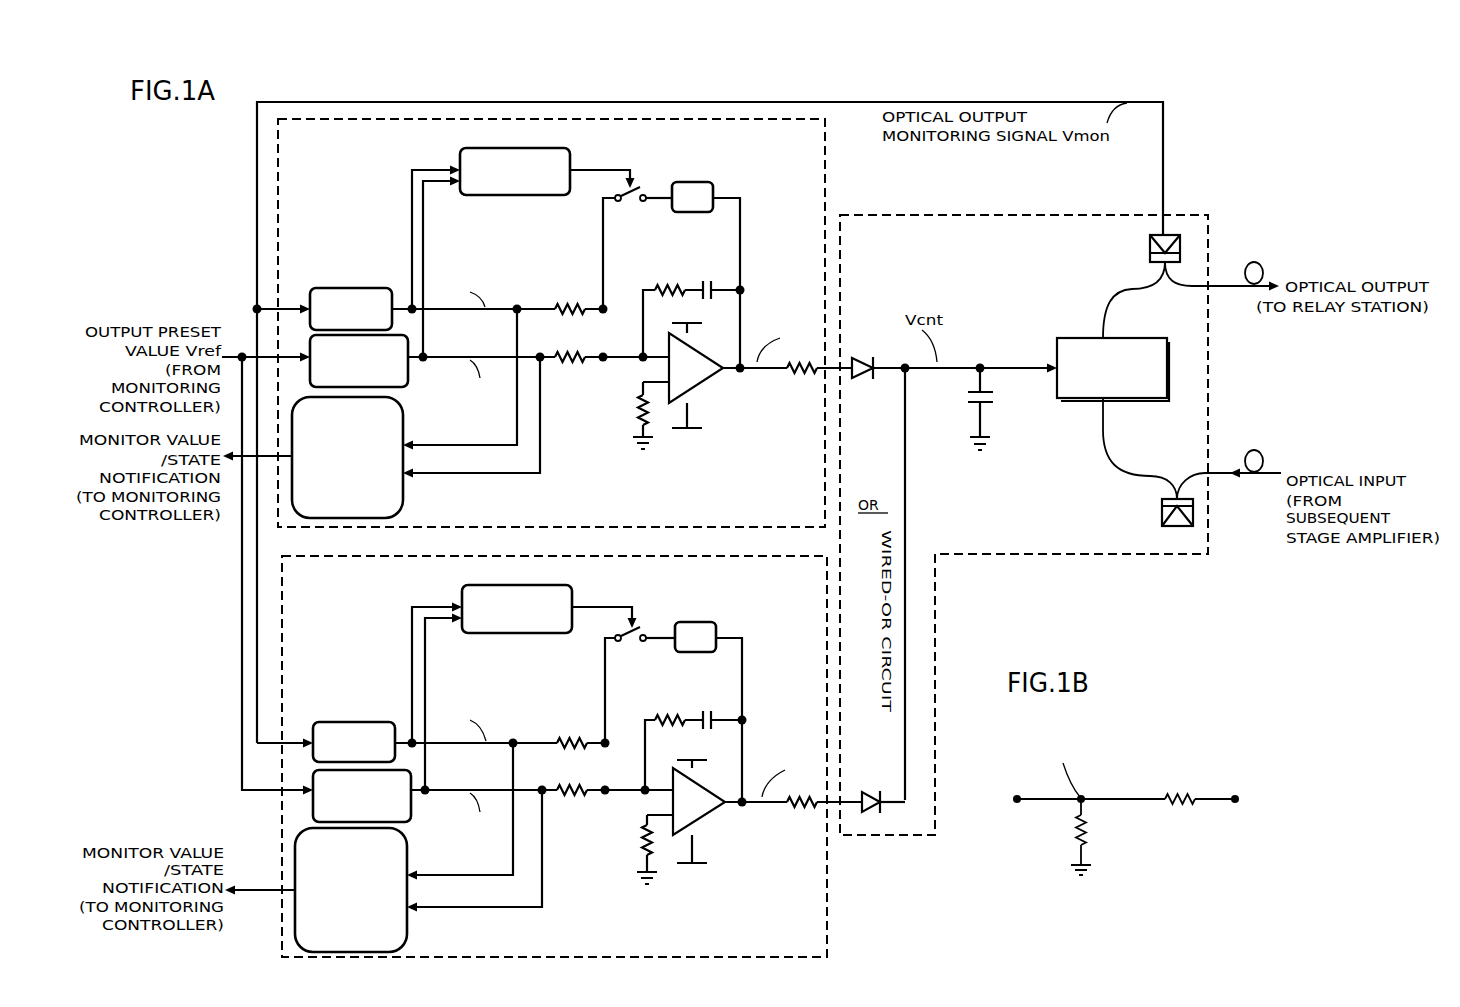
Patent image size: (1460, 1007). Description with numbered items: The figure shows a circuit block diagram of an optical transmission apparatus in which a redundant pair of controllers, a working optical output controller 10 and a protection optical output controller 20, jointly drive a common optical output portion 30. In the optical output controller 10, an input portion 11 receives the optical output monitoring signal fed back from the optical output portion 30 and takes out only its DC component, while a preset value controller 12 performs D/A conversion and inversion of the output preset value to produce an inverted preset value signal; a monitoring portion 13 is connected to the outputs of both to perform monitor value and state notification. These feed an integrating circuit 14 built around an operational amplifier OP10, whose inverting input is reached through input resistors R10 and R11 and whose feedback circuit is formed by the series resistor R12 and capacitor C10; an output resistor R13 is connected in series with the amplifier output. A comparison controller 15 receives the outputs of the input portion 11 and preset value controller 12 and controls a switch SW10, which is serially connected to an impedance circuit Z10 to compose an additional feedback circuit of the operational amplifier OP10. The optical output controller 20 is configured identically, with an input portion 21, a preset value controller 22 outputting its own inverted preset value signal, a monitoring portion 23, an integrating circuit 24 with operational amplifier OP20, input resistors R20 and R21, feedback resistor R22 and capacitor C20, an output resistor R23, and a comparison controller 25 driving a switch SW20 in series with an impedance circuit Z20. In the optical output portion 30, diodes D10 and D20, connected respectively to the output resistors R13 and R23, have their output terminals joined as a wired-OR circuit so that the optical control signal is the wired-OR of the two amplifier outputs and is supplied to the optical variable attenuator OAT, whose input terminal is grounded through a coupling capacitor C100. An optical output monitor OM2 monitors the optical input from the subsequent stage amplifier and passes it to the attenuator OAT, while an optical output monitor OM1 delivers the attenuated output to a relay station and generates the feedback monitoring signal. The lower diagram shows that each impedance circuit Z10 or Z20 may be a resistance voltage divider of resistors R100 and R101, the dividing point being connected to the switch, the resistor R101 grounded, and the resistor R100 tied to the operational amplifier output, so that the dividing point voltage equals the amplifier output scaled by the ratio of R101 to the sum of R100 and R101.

In FIG. 1A, the working optical output controller 10 is at (478, 122).
In FIG. 1A, the input portion 11 is at (352, 287).
In FIG. 1A, the preset value controller 12 is at (408, 384).
In FIG. 1A, the monitoring portion 13 is at (403, 492).
In FIG. 1A, the integrating circuit 14 is at (622, 344).
In FIG. 1A, the comparison controller 15 is at (497, 196).
In FIG. 1A, the protection optical output controller 20 is at (478, 558).
In FIG. 1A, the input portion 21 is at (352, 721).
In FIG. 1A, the preset value controller 22 is at (411, 820).
In FIG. 1A, the monitoring portion 23 is at (407, 925).
In FIG. 1A, the integrating circuit 24 is at (628, 781).
In FIG. 1A, the comparison controller 25 is at (500, 634).
In FIG. 1A, the optical output portion 30 is at (1123, 218).
In FIG. 1A, the input resistor R10 is at (570, 301).
In FIG. 1A, the input resistor R11 is at (570, 370).
In FIG. 1A, the feedback resistor R12 is at (664, 280).
In FIG. 1A, the output resistor R13 is at (802, 380).
In FIG. 1A, the feedback capacitor C10 is at (705, 282).
In FIG. 1A, the impedance circuit Z10 is at (692, 197).
In FIG. 1B, the impedance circuit Z10 is at (1180, 810).
In FIG. 1A, the switch SW10 is at (637, 248).
In FIG. 1A, the operational amplifier OP10 is at (700, 388).
In FIG. 1A, the diode D10 is at (863, 357).
In FIG. 1A, the input resistor R20 is at (572, 733).
In FIG. 1A, the input resistor R21 is at (572, 803).
In FIG. 1A, the feedback resistor R22 is at (667, 710).
In FIG. 1A, the output resistor R23 is at (802, 816).
In FIG. 1A, the feedback capacitor C20 is at (703, 708).
In FIG. 1A, the impedance circuit Z20 is at (695, 637).
In FIG. 1A, the switch SW20 is at (640, 685).
In FIG. 1A, the operational amplifier OP20 is at (710, 813).
In FIG. 1A, the diode D20 is at (868, 789).
In FIG. 1A, the coupling capacitor C100 is at (997, 409).
In FIG. 1A, the optical variable attenuator OAT is at (1067, 338).
In FIG. 1A, the optical output monitor OM1 is at (1176, 228).
In FIG. 1A, the optical output monitor OM2 is at (1183, 527).
In FIG. 1B, the resistor R100 is at (1175, 787).
In FIG. 1B, the resistor R101 is at (1057, 837).